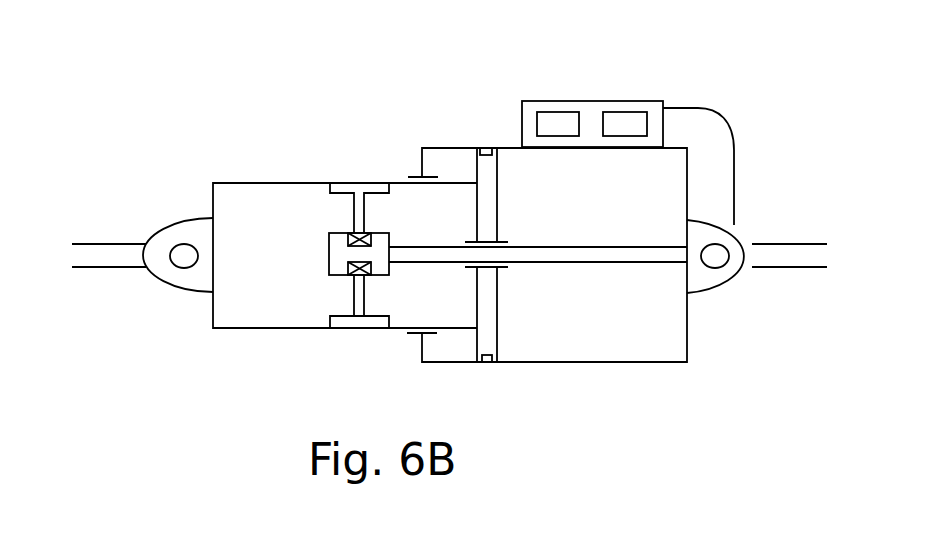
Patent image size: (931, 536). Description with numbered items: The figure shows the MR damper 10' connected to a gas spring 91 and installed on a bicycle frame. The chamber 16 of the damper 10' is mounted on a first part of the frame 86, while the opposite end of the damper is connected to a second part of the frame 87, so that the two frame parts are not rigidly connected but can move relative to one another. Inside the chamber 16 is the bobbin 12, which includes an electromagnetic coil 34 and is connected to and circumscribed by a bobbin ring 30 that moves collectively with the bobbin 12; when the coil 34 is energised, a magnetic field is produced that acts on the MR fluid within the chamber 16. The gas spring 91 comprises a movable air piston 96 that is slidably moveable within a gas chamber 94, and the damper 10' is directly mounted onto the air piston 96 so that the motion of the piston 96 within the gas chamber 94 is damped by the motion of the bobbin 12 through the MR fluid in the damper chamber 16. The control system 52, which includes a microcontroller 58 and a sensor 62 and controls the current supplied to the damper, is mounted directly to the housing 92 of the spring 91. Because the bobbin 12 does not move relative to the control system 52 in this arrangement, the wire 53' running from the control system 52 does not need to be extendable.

The MR damper 10' is at (449, 246).
The bobbin 12 is at (345, 254).
The chamber 16 is at (249, 181).
The bobbin ring 30 is at (357, 322).
The electromagnetic coil 34 is at (336, 274).
The control system 52 is at (585, 92).
The wire 53' is at (738, 164).
The microcontroller 58 is at (632, 120).
The sensor 62 is at (557, 122).
The first part of the frame 86 is at (104, 258).
The second part of the frame 87 is at (787, 258).
The gas spring 91 is at (572, 383).
The housing 92 is at (653, 364).
The gas chamber 94 is at (523, 349).
The air piston 96 is at (484, 178).